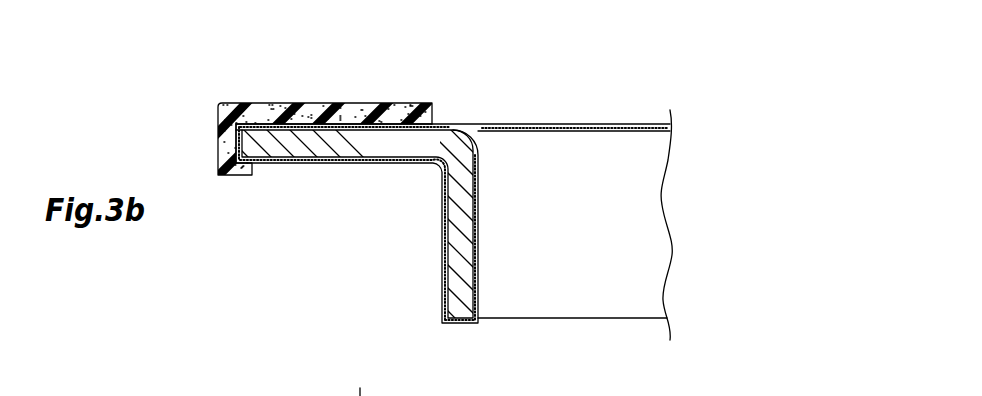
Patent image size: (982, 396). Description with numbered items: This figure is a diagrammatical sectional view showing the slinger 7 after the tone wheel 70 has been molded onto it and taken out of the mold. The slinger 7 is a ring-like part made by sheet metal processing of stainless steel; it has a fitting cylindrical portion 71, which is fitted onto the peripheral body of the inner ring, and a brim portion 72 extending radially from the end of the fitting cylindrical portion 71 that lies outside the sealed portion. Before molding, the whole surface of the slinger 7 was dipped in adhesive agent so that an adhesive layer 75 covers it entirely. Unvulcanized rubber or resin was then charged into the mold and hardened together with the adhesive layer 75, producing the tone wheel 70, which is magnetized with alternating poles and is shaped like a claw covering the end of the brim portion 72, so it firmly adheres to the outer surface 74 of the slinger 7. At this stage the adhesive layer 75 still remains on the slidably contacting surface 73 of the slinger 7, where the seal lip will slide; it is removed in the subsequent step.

The slinger 7 is at (339, 233).
The tone wheel 70 is at (320, 103).
The fitting cylindrical portion 71 is at (339, 230).
The brim portion 72 is at (300, 148).
The slidably contacting surface 73 is at (443, 255).
The outer surface 74 is at (350, 125).
The adhesive layer 75 is at (440, 123).